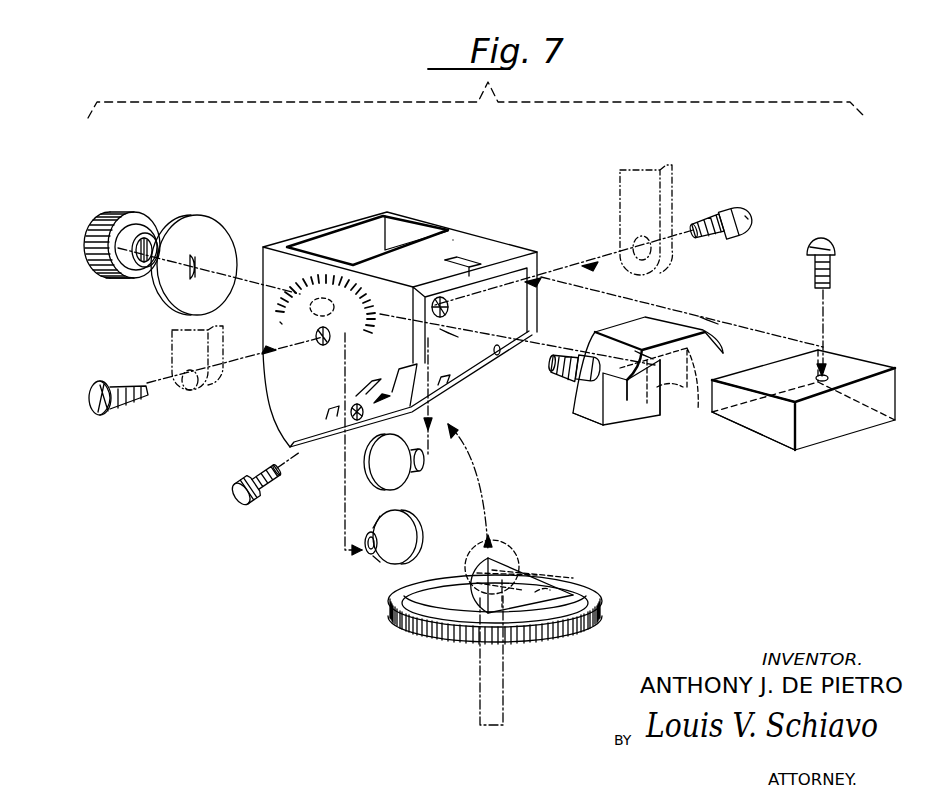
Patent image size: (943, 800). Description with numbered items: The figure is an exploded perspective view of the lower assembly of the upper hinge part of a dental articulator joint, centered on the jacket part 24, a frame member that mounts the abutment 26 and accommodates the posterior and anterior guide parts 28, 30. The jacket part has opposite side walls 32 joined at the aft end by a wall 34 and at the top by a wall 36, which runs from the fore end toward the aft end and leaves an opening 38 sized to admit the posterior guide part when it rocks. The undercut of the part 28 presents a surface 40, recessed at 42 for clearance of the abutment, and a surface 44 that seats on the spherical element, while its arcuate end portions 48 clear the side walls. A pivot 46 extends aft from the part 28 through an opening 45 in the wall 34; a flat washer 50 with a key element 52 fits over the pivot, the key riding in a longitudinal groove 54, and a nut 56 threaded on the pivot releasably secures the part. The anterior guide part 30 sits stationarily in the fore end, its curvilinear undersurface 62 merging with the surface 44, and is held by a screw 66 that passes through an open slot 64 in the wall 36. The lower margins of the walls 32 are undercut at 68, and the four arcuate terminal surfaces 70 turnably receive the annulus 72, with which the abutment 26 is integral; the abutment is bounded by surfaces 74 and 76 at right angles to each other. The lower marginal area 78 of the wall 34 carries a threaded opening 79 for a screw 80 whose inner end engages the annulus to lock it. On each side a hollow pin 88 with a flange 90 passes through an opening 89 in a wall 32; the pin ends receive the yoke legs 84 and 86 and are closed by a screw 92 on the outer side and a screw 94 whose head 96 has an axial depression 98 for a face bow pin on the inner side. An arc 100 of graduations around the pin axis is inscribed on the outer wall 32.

The jacket part 24 is at (500, 243).
The abutment 26 is at (538, 568).
The posterior guide part 28 is at (630, 335).
The anterior guide part 30 is at (833, 427).
The side walls 32 is at (283, 385).
The wall 34 is at (350, 242).
The wall 36 is at (453, 240).
The opening 38 is at (403, 237).
The surface 40 is at (670, 390).
The recess 42 is at (688, 410).
The surface 44 is at (618, 403).
The opening 45 is at (280, 322).
The pivot 46 is at (575, 387).
The arcuately shaped end portions 48 is at (588, 403).
The flat washer 50 is at (203, 232).
The key element 52 is at (203, 253).
The groove 54 is at (557, 367).
The nut 56 is at (128, 214).
The undersurface 62 is at (753, 433).
The open slot 64 is at (445, 266).
The screw 66 is at (833, 243).
The undercuts 68 is at (358, 390).
The terminal surfaces 70 is at (330, 409).
The annulus 72 is at (600, 612).
The surface 74 is at (480, 572).
The surface 76 is at (537, 590).
The lower marginal area 78 is at (280, 420).
The opening 79 is at (359, 429).
The screw 80 is at (233, 481).
The leg 84 is at (172, 352).
The leg 86 is at (653, 173).
The hollow pin 88 is at (422, 462).
The opening 89 is at (318, 343).
The flange 90 is at (402, 478).
The screw 92 is at (134, 403).
The screw 94 is at (707, 220).
The head 96 is at (737, 208).
The axial depression 98 is at (750, 217).
The arc of graduations 100 is at (308, 292).